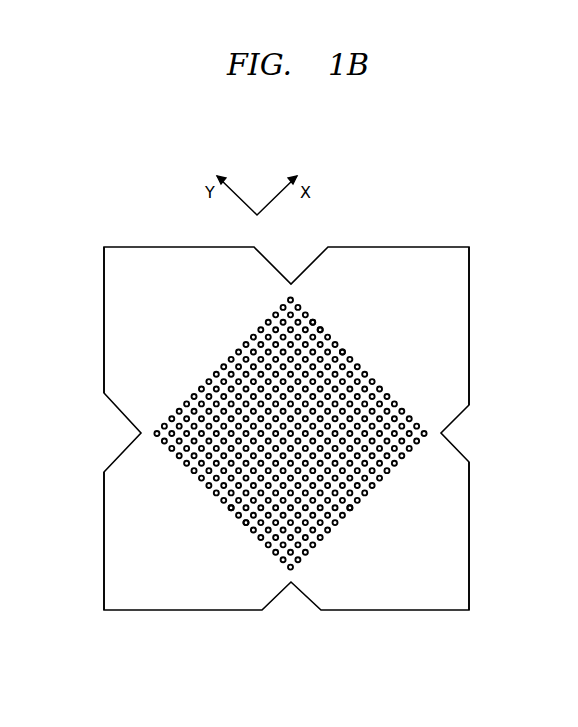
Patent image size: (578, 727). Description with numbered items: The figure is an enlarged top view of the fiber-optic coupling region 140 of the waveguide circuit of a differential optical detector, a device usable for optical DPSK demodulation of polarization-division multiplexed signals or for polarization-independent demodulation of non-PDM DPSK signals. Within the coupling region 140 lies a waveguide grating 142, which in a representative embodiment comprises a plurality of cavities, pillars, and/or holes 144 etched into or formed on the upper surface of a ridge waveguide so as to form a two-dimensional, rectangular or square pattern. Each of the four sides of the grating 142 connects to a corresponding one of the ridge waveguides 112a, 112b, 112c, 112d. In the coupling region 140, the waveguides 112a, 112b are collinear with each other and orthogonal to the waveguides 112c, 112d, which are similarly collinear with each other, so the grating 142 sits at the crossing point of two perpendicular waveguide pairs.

The fiber-optic coupling region 140 is at (308, 115).
The ridge waveguide 112a is at (116, 324).
The ridge waveguide 112b is at (457, 569).
The ridge waveguide 112c is at (116, 569).
The ridge waveguide 112d is at (457, 324).
The waveguide grating 142 is at (181, 475).
The holes 144 is at (315, 321).